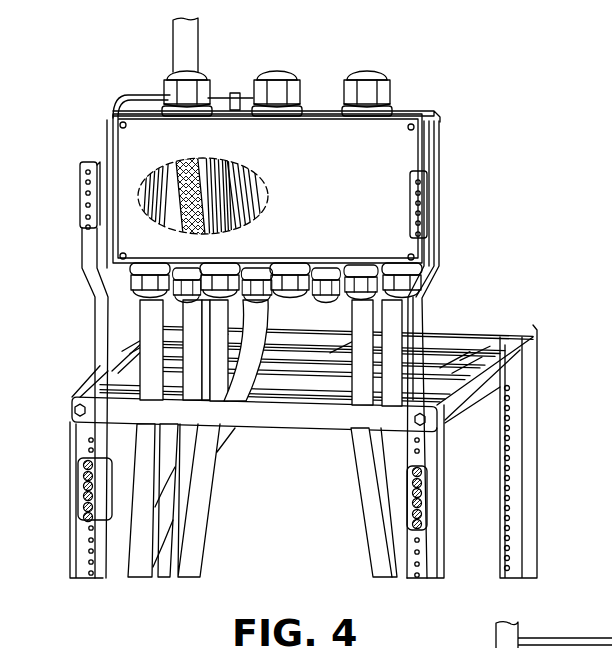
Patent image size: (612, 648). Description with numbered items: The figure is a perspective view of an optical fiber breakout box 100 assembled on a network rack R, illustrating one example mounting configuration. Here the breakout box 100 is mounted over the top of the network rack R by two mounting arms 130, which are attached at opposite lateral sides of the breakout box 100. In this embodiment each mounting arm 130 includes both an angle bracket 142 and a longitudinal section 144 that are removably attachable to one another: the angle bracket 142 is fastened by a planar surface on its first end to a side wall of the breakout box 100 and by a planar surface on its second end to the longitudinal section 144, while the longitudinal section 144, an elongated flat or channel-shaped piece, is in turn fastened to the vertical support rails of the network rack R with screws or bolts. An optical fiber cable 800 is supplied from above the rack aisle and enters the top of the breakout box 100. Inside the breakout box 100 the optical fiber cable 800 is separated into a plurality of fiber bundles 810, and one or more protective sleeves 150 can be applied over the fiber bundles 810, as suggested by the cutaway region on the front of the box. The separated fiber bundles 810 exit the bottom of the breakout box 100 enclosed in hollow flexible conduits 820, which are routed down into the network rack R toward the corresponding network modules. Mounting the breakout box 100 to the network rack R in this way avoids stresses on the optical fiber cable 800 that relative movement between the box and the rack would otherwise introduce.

The breakout box 100 is at (417, 118).
The mounting arm 130 is at (284, 349).
The angle bracket 142 is at (436, 158).
The longitudinal section 144 is at (428, 196).
The protective sleeve 150 is at (188, 162).
The optical fiber cable 800 is at (182, 43).
The fiber bundle 810 is at (147, 183).
The hollow flexible conduit 820 is at (373, 493).
The network rack R is at (527, 357).